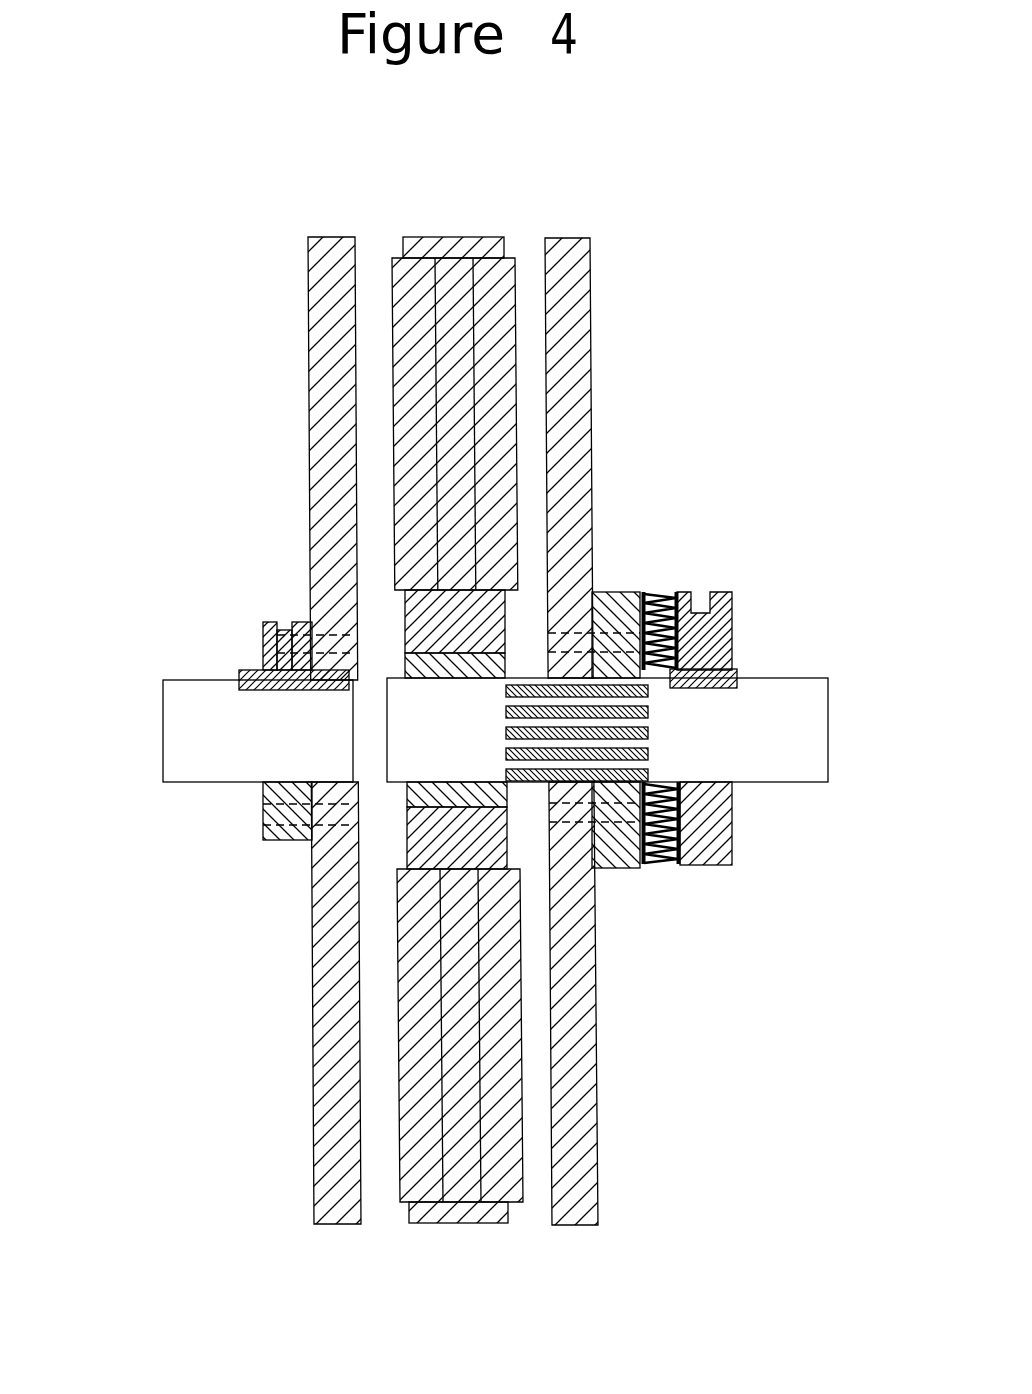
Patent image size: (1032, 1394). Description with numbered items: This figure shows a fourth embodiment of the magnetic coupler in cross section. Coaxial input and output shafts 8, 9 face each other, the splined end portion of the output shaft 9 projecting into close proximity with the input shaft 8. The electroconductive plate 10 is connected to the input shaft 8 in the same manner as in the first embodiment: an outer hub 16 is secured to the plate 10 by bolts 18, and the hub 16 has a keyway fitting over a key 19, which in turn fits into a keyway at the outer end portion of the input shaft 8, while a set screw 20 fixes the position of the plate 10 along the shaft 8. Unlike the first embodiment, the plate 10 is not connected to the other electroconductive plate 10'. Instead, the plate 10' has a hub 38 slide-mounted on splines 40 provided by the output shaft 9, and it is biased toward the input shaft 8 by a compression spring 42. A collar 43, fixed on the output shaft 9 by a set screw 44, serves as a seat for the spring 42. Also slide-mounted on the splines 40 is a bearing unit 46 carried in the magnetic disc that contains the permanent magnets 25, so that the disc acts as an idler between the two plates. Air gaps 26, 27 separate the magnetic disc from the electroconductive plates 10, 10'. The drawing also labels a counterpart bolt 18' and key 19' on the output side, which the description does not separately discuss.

The input shaft 8 is at (162, 700).
The output shaft 9 is at (796, 674).
The electroconductive plate 10 is at (286, 700).
The electroconductive plate 10' is at (621, 706).
The outer hub 16 is at (282, 840).
The bolts 18 is at (206, 811).
The hub block 18' is at (636, 871).
The key 19 is at (213, 586).
The collar 19' is at (774, 567).
The set screw 20 is at (280, 618).
The permanent magnets 25 is at (457, 1118).
The air gap 26 is at (378, 1045).
The air gap 27 is at (535, 1043).
The hub 38 is at (616, 590).
The splines 40 is at (533, 783).
The compression spring 42 is at (663, 590).
The collar 43 is at (717, 867).
The set screw 44 is at (702, 622).
The bearing unit 46 is at (422, 797).